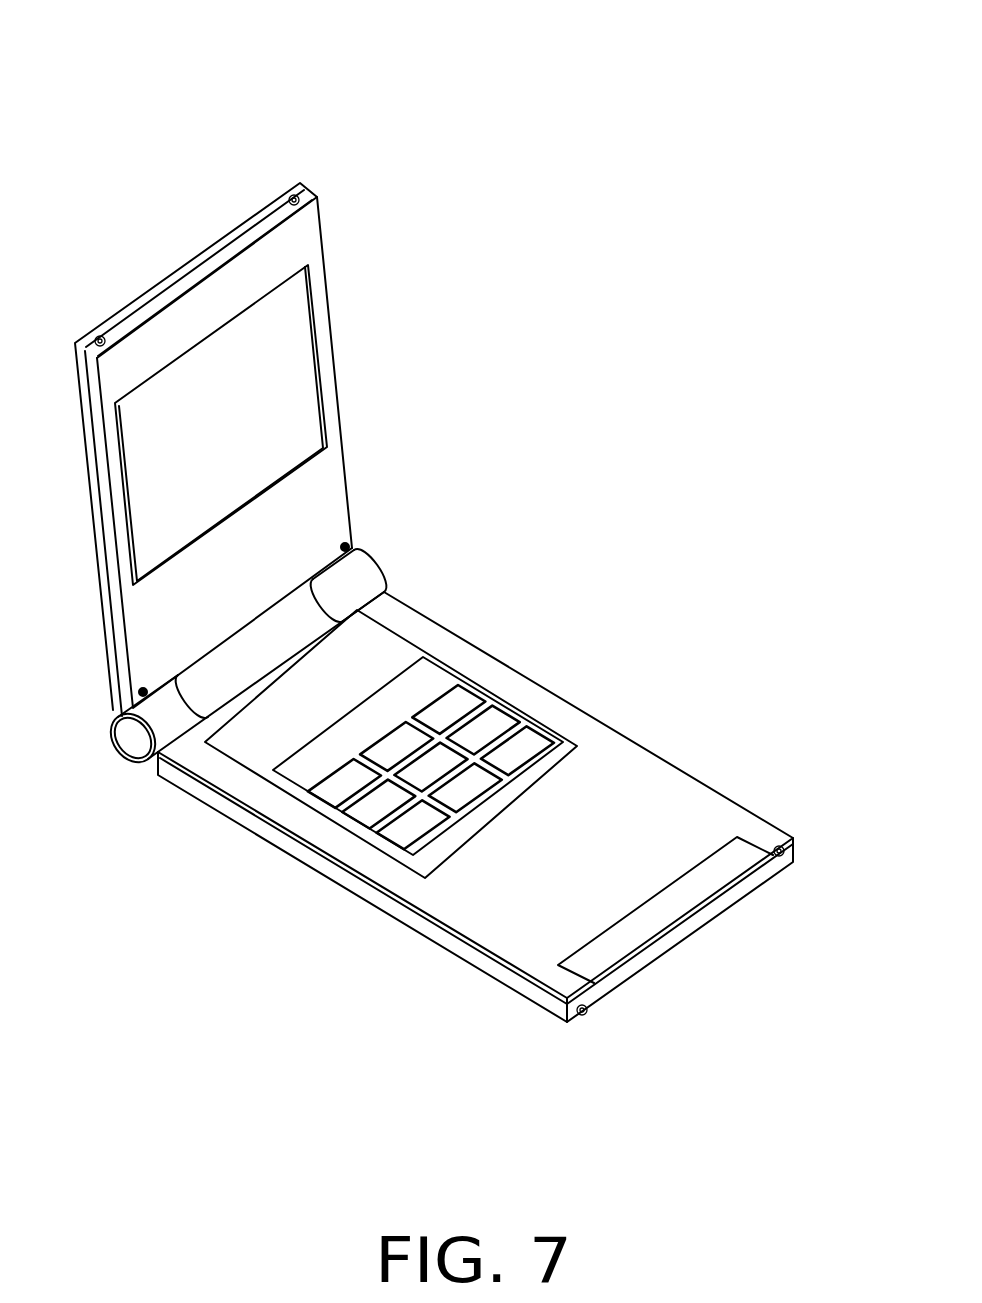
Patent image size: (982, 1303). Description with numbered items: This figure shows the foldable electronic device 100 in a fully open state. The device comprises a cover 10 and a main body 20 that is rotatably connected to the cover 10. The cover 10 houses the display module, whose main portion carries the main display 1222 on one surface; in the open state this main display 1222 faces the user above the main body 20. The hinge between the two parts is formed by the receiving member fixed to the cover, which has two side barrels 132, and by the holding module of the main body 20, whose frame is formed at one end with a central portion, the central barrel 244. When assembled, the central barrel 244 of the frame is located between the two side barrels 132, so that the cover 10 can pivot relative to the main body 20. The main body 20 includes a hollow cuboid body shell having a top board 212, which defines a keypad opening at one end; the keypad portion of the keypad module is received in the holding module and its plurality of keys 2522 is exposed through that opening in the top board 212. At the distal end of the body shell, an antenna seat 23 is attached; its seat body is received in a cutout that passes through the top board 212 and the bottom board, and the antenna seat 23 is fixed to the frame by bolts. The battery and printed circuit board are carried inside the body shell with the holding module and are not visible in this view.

The foldable electronic device 100 is at (453, 524).
The cover 10 is at (399, 283).
The main display 1222 is at (272, 393).
The side barrel 132 is at (355, 575).
The central portion (central barrel) 244 is at (292, 627).
The main body 20 is at (626, 694).
The top board 212 is at (645, 805).
The keys 2522 is at (483, 733).
The antenna seat 23 is at (650, 918).